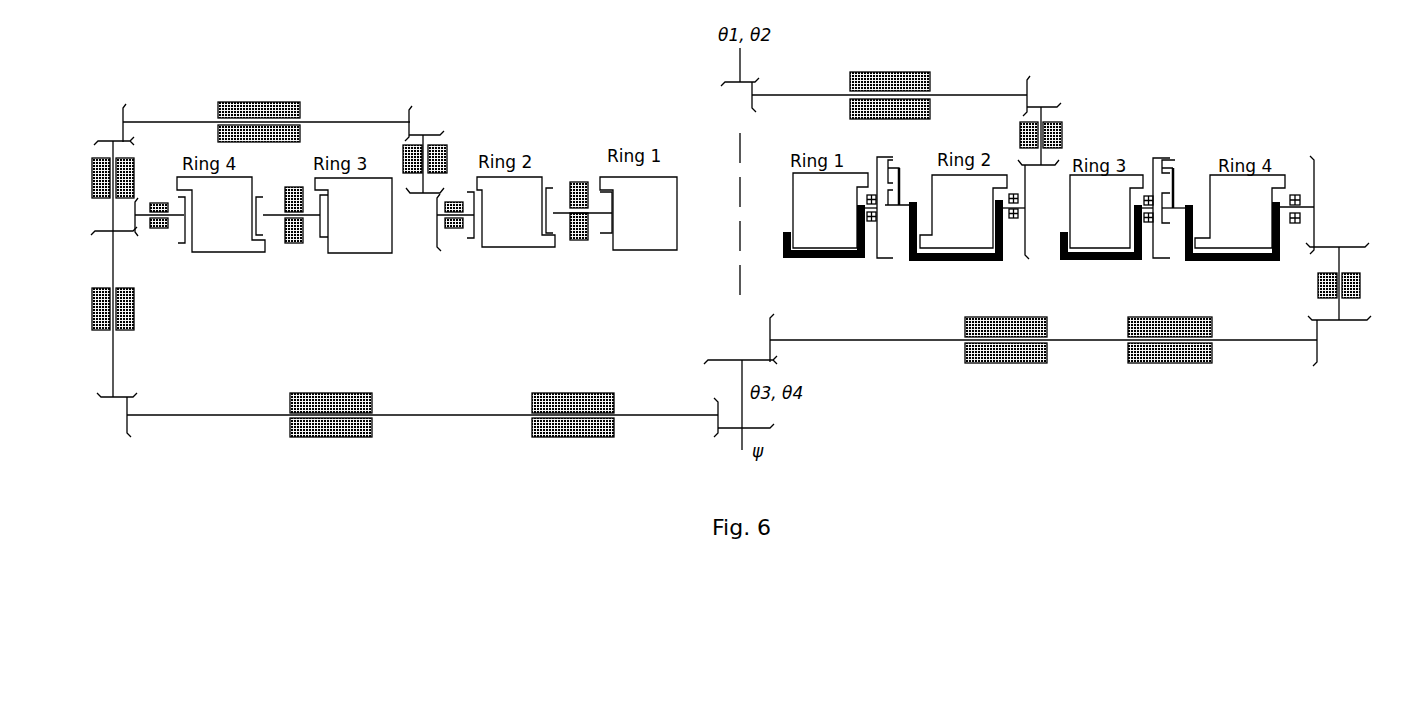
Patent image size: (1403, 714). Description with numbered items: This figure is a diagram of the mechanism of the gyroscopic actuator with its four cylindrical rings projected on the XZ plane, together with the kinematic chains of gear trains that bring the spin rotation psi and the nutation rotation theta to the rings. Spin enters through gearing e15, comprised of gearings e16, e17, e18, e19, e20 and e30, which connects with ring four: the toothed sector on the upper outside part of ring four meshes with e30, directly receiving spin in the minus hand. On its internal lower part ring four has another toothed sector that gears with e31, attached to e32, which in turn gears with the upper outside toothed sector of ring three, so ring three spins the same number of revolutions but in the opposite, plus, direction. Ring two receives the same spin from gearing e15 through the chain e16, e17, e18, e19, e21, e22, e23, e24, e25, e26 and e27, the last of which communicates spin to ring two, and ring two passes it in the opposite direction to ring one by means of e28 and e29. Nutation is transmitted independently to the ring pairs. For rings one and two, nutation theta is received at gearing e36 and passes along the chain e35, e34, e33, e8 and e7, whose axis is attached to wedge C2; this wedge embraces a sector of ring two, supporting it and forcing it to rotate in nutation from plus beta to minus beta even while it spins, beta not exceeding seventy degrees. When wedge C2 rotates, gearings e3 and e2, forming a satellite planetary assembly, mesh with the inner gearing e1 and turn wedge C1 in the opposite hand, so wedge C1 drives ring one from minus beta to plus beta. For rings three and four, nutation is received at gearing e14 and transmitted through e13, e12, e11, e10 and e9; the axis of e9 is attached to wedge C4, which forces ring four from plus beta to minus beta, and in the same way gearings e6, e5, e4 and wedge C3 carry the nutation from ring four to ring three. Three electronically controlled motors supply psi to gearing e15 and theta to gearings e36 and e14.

The inner gearing e1 is at (885, 223).
The gearing e2 is at (903, 177).
The gearing e3 is at (899, 218).
The gearing e4 is at (1165, 221).
The gearing e5 is at (1179, 182).
The gearing e6 is at (1170, 222).
The gearing e7 is at (1039, 212).
The gearing e8 is at (1038, 175).
The gearing e9 is at (1325, 205).
The gearing e10 is at (1345, 241).
The gearing e11 is at (1350, 327).
The gearing e12 is at (1331, 348).
The gearing e13 is at (757, 333).
The gearing e14 is at (728, 361).
The gearing e15 is at (761, 429).
The gearing e16 is at (698, 414).
The gearing e17 is at (114, 426).
The gearing e18 is at (98, 397).
The gearing e19 is at (96, 235).
The gearing e20 is at (152, 206).
The gearing e21 is at (101, 141).
The gearing e22 is at (109, 116).
The gearing e23 is at (393, 116).
The gearing e24 is at (436, 129).
The gearing e25 is at (420, 203).
The gearing e26 is at (426, 229).
The gearing e27 is at (466, 228).
The gearing e28 is at (558, 231).
The gearing e29 is at (601, 231).
The gearing e30 is at (174, 234).
The gearing e31 is at (266, 238).
The gearing e32 is at (319, 237).
The gearing e33 is at (1060, 104).
The gearing e34 is at (1040, 91).
The gearing e35 is at (775, 94).
The gearing e36 is at (725, 81).
The wedge C1 is at (824, 246).
The wedge C2 is at (956, 245).
The wedge C3 is at (1101, 247).
The wedge C4 is at (1232, 245).